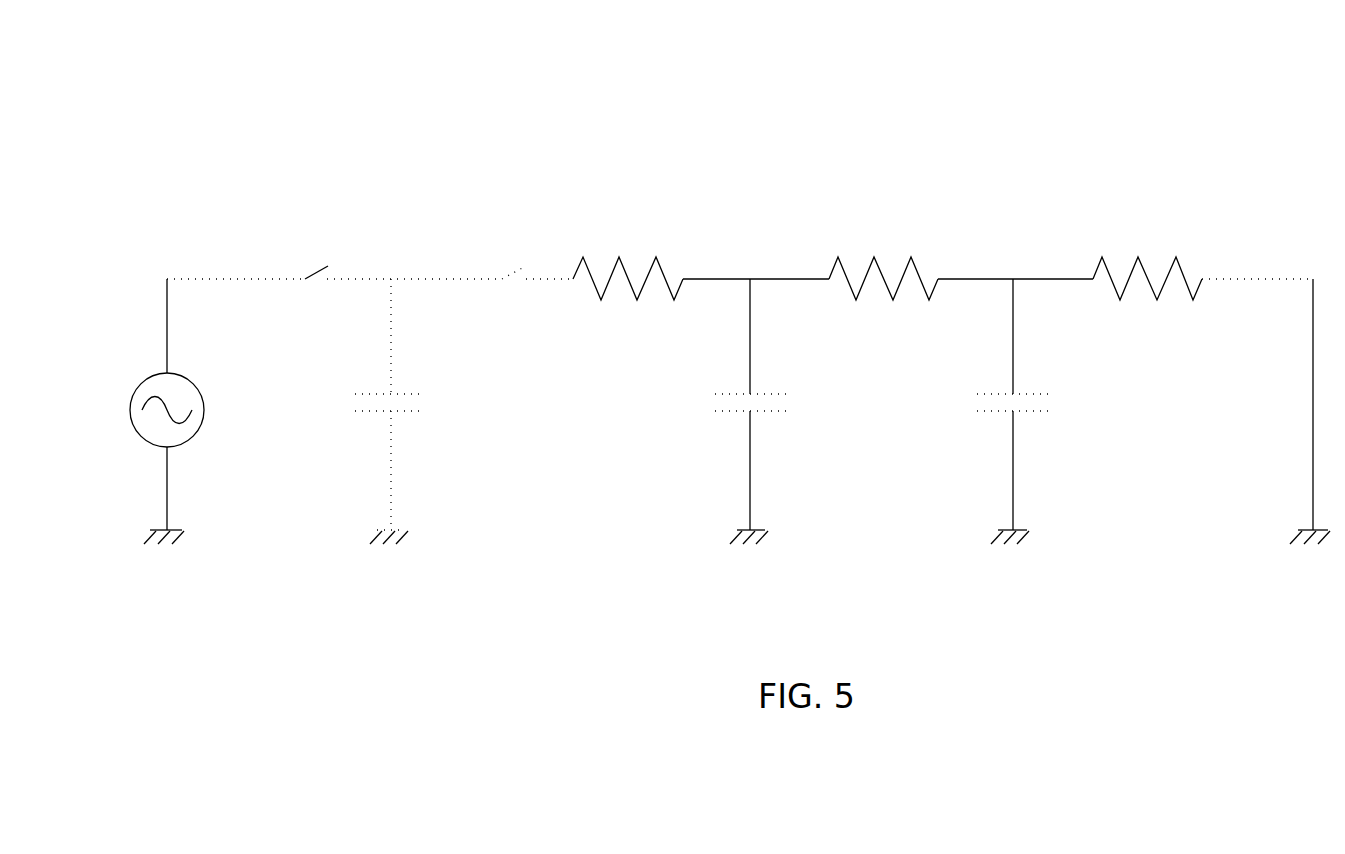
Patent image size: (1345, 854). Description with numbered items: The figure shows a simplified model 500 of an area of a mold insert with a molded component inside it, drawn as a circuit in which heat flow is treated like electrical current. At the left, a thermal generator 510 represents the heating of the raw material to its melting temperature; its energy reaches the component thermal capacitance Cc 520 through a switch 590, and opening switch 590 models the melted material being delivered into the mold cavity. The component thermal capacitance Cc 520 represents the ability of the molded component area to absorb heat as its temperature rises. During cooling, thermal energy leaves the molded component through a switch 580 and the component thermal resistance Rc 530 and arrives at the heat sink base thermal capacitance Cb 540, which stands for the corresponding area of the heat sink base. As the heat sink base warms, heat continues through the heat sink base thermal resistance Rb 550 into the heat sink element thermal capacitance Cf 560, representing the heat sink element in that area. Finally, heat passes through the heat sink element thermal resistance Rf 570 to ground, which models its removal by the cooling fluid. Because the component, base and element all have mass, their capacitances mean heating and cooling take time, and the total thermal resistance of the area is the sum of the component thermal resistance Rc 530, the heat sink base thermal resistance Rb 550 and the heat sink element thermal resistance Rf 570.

The simplified model 500 is at (823, 66).
The thermal generator 510 is at (193, 385).
The component thermal capacitance Cc 520 is at (405, 395).
The component thermal resistance Rc 530 is at (623, 262).
The heat sink base thermal capacitance Cb 540 is at (772, 394).
The heat sink base thermal resistance Rb 550 is at (913, 261).
The heat sink element thermal capacitance Cf 560 is at (1027, 393).
The heat sink element thermal resistance Rf 570 is at (1173, 262).
The switch 580 is at (510, 264).
The switch 590 is at (313, 263).